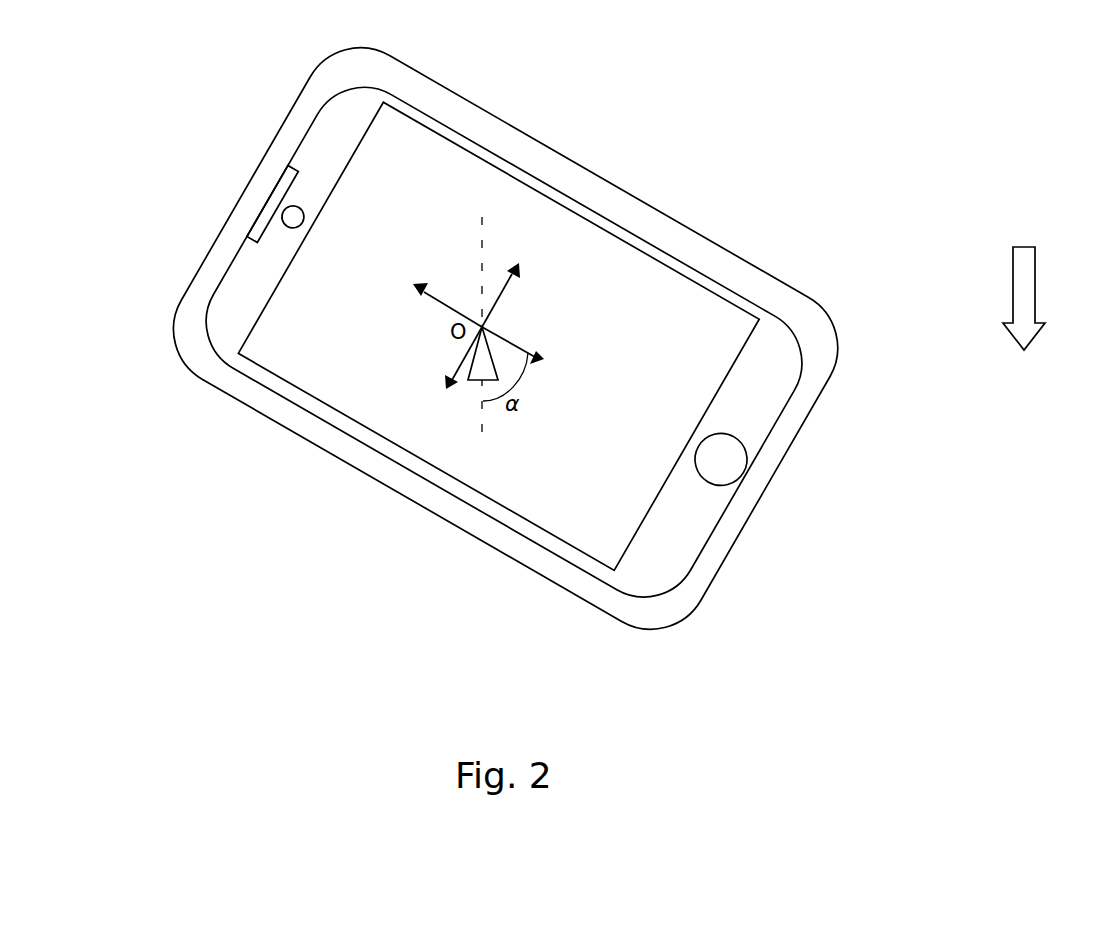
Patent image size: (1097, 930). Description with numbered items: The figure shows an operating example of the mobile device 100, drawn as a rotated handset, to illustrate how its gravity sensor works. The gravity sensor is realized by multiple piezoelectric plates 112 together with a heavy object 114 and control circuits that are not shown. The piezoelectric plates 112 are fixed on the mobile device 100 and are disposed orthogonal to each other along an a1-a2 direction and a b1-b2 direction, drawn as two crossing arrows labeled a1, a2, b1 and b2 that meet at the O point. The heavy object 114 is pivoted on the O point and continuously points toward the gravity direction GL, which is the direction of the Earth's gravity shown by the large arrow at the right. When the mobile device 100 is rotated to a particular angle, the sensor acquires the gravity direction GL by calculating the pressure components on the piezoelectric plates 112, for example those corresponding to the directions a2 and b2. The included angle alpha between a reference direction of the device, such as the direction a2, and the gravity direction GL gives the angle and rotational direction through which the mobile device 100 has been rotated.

The mobile device 100 is at (267, 140).
The piezoelectric plates 112 is at (494, 308).
The heavy object 114 is at (468, 380).
The direction a1 is at (430, 299).
The direction a2 is at (529, 356).
The direction b1 is at (510, 281).
The direction b2 is at (449, 371).
The gravity direction GL is at (1024, 276).